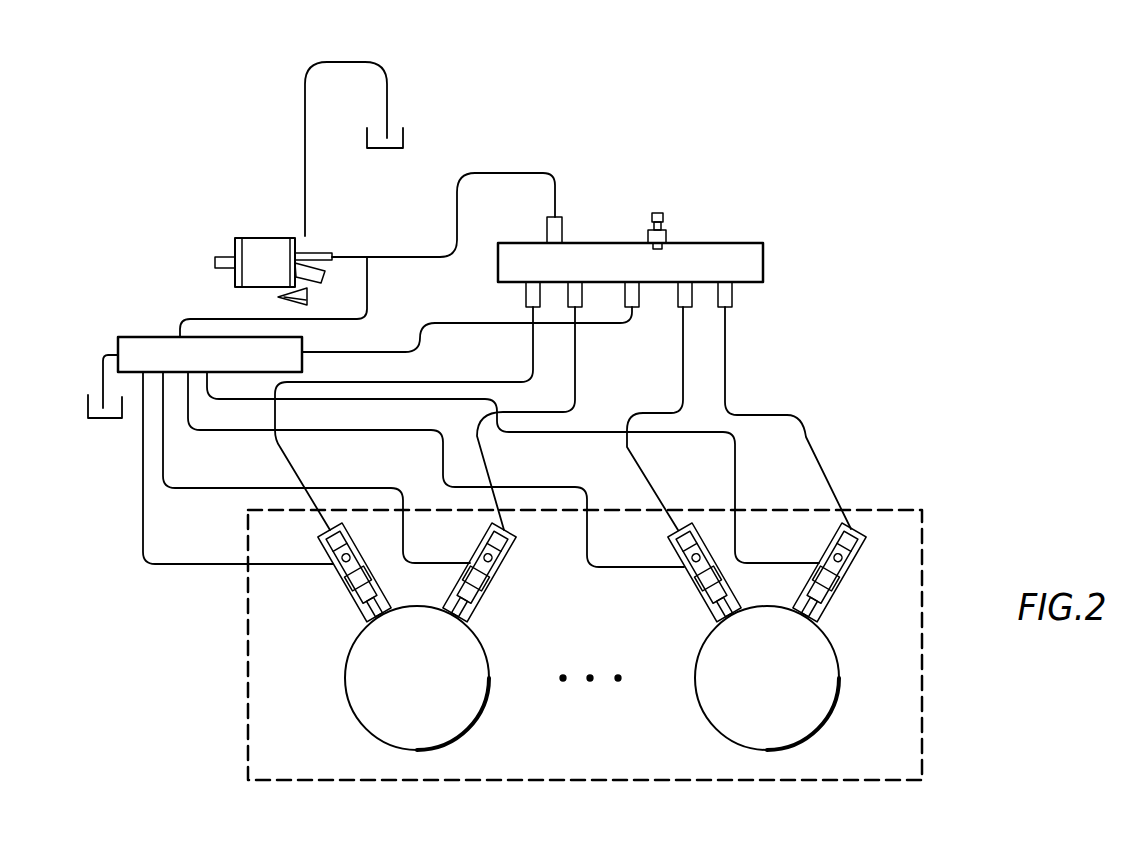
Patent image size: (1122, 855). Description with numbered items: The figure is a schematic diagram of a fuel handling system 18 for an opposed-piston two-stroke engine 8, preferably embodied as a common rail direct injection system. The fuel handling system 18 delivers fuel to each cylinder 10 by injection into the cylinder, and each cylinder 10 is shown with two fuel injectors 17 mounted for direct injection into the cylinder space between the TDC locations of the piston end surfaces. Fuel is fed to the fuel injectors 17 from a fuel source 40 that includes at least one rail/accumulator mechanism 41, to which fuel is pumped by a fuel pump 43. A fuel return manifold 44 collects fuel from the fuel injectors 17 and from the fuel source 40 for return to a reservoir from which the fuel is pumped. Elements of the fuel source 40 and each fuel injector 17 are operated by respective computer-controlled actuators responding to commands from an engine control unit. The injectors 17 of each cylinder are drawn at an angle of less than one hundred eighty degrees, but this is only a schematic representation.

The engine 8 is at (925, 728).
The cylinder 10 is at (460, 735).
The fuel injector 17 is at (360, 596).
The fuel handling system 18 is at (862, 106).
The fuel source 40 is at (598, 200).
The rail/accumulator mechanism 41 is at (710, 243).
The fuel pump 43 is at (267, 237).
The fuel return manifold 44 is at (303, 347).